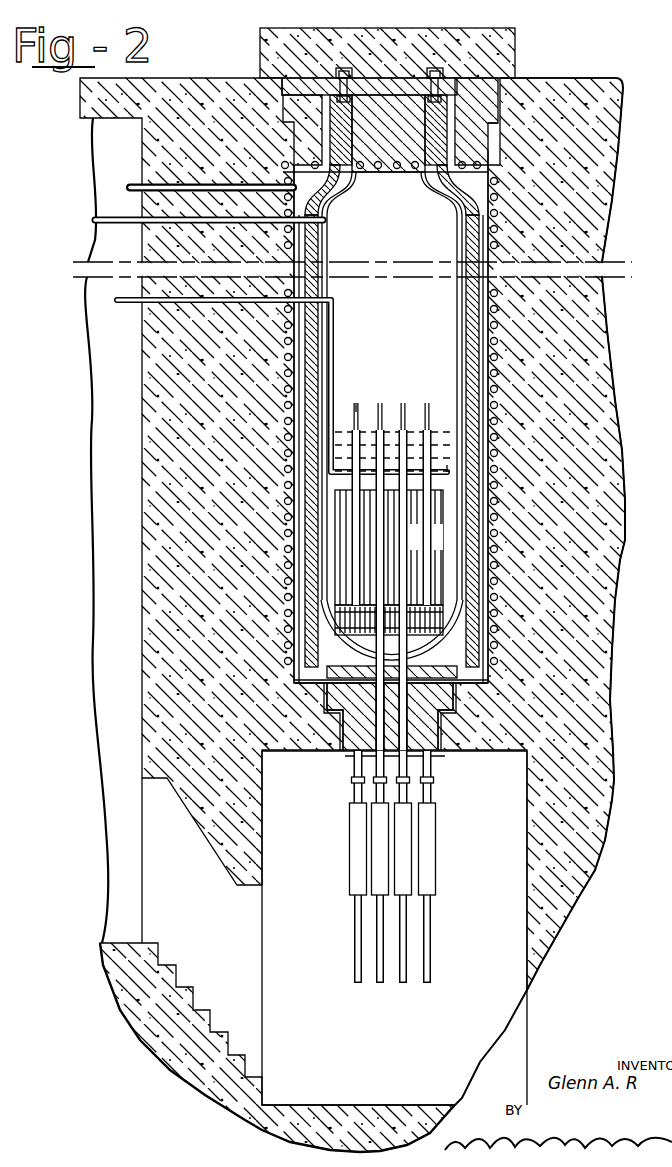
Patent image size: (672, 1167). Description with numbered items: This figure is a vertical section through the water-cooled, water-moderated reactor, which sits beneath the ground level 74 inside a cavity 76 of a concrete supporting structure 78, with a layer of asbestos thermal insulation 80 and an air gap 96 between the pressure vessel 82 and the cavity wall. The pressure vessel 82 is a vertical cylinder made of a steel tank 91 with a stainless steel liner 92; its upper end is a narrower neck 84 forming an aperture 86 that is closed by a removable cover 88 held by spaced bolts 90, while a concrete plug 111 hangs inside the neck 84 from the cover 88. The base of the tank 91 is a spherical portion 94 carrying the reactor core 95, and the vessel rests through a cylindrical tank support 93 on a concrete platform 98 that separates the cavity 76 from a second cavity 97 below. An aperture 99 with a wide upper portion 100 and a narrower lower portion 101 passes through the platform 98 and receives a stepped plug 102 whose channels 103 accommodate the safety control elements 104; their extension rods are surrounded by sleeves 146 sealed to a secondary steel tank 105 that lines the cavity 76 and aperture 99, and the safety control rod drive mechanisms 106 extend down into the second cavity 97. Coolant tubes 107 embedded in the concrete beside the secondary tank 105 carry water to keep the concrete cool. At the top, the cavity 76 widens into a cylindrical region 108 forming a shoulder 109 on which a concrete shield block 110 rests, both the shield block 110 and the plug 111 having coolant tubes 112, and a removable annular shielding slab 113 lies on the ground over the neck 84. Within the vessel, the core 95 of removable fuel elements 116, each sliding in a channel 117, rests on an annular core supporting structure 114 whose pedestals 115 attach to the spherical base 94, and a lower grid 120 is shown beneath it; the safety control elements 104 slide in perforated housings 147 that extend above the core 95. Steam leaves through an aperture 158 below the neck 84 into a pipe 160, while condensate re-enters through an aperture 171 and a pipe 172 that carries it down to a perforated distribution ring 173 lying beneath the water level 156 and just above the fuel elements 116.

The ground level 74 is at (565, 80).
The cavity 76 is at (489, 362).
The concrete supporting structure 78 is at (592, 400).
The thermal insulation 80 is at (476, 338).
The pressure vessel 82 is at (468, 411).
The neck 84 is at (427, 142).
The aperture 86 is at (351, 104).
The removable cover 88 is at (388, 133).
The bolts 90 is at (439, 98).
The tank 91 is at (470, 296).
The stainless steel liner 92 is at (456, 287).
The tank support 93 is at (326, 668).
The spherical portion 94 is at (430, 716).
The reactor core 95 is at (436, 547).
The air gap 96 is at (298, 345).
The second cavity 97 is at (418, 1047).
The platform 98 is at (512, 752).
The aperture 99 is at (337, 701).
The upper portion 100 is at (327, 691).
The lower portion 101 is at (340, 727).
The plug 102 is at (455, 695).
The channels 103 is at (443, 725).
The safety control elements 104 is at (353, 413).
The secondary steel tank 105 is at (286, 386).
The safety control rod drive mechanisms 106 is at (356, 848).
The coolant tubes 107 is at (286, 490).
The cylindrical region 108 is at (482, 101).
The shoulder 109 is at (494, 128).
The shield block 110 is at (490, 152).
The plug 111 is at (408, 173).
The coolant tubes 112 is at (357, 174).
The shielding slab 113 is at (510, 47).
The core supporting structure 114 is at (335, 615).
The pedestals 115 is at (461, 648).
The fuel elements 116 is at (352, 551).
The channel 117 is at (443, 615).
The lower grid 120 is at (335, 630).
The sleeves 146 is at (352, 790).
The housings 147 is at (425, 428).
The water level 156 is at (455, 440).
The aperture 158 is at (328, 219).
The pipe 160 is at (94, 216).
The aperture 171 is at (332, 302).
The pipe 172 is at (337, 346).
The distribution ring 173 is at (450, 470).